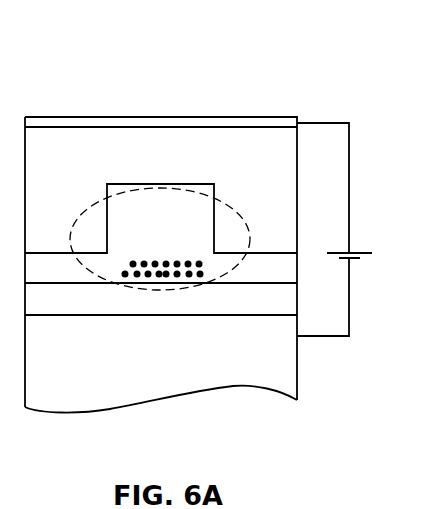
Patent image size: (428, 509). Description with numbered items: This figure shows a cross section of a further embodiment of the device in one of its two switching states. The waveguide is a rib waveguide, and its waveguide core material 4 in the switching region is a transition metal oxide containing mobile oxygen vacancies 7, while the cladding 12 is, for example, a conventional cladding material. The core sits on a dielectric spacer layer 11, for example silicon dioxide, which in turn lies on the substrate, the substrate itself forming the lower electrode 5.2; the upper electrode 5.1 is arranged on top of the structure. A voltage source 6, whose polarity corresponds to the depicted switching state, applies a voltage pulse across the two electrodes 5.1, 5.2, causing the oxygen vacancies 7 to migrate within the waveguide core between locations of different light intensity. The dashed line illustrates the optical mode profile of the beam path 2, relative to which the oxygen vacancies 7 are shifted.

The electrode 5.1 is at (125, 117).
The waveguide core material 4 is at (119, 207).
The oxygen vacancies 7 is at (176, 262).
The beam path 2 is at (234, 207).
The cladding 12 is at (278, 155).
The voltage source 6 is at (353, 259).
The dielectric spacer layer 11 is at (52, 300).
The electrode 5.2 is at (182, 370).